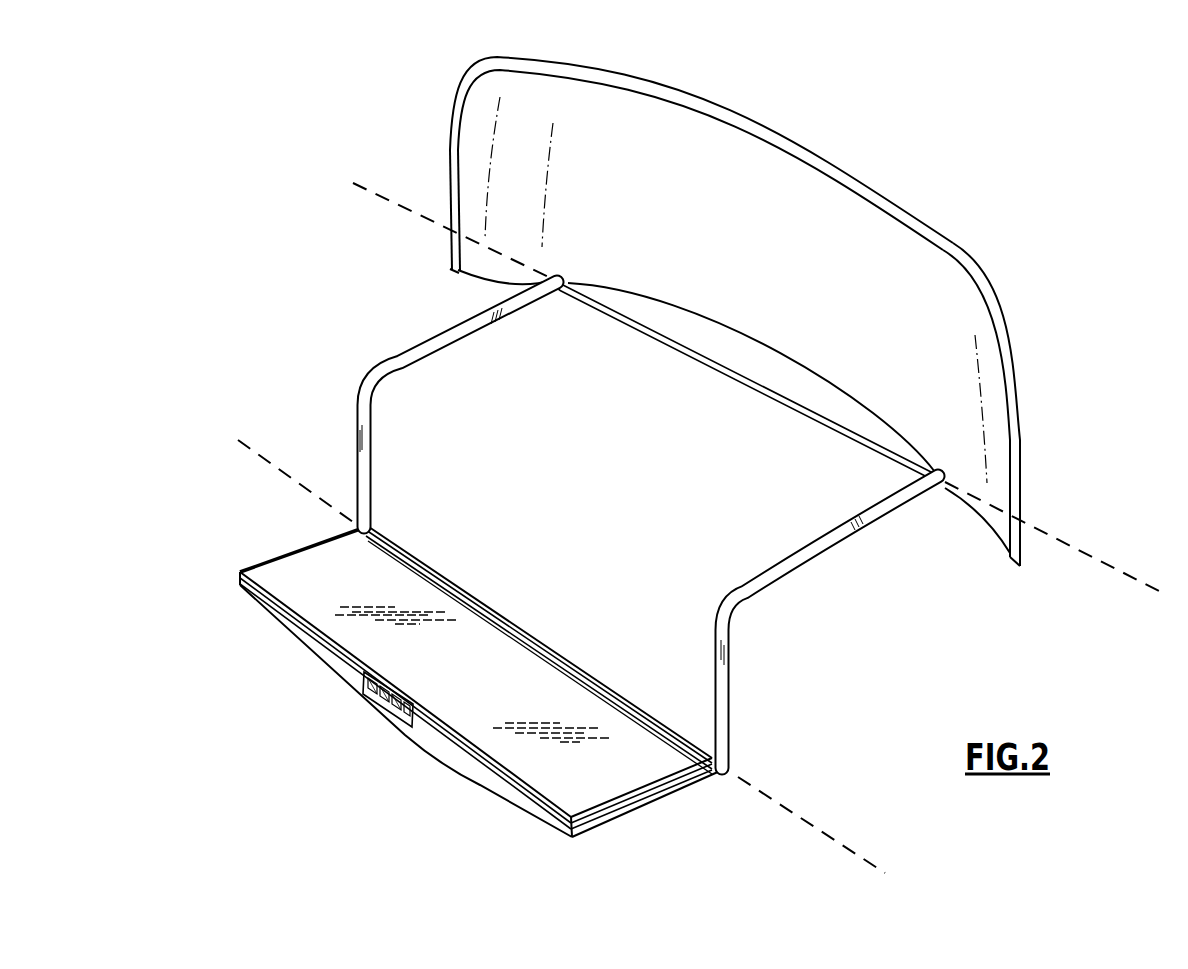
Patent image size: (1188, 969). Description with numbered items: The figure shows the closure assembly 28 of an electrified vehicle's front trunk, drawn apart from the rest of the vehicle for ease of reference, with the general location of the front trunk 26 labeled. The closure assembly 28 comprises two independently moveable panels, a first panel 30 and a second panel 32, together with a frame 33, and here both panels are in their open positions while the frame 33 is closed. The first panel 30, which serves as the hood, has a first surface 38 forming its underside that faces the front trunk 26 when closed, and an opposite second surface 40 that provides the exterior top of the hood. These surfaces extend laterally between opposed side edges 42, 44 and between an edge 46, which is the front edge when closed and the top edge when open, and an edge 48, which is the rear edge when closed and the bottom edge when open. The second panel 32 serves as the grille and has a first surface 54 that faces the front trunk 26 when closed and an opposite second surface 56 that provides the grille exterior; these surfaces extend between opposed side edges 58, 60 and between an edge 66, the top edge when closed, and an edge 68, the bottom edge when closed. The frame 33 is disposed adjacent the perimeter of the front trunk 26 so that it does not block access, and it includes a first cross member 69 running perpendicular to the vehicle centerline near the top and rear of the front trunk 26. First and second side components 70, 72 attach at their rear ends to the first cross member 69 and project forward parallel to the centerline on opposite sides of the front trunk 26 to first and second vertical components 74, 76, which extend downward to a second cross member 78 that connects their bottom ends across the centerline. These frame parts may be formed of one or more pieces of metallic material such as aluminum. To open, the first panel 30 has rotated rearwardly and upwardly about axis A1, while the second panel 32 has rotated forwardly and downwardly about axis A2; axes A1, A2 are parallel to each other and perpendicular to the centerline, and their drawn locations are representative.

The front trunk 26 is at (621, 482).
The closure assembly 28 is at (668, 474).
The first panel 30 is at (758, 298).
The second panel 32 is at (450, 708).
The frame 33 is at (652, 525).
The first surface 38 is at (637, 137).
The second surface 40 is at (750, 311).
The side edge 42 is at (449, 152).
The side edge 44 is at (1025, 430).
The edge 46 is at (770, 127).
The edge 48 is at (748, 335).
The first surface 54 is at (322, 578).
The second surface 56 is at (433, 772).
The side edge 58 is at (240, 576).
The side edge 60 is at (612, 815).
The edge 66 is at (480, 711).
The edge 68 is at (545, 634).
The first cross member 69 is at (803, 420).
The first side component 70 is at (458, 404).
The second side component 72 is at (833, 622).
The first vertical component 74 is at (371, 468).
The second vertical component 76 is at (735, 690).
The second cross member 78 is at (597, 677).
The axis A1 is at (1128, 576).
The axis A2 is at (849, 851).